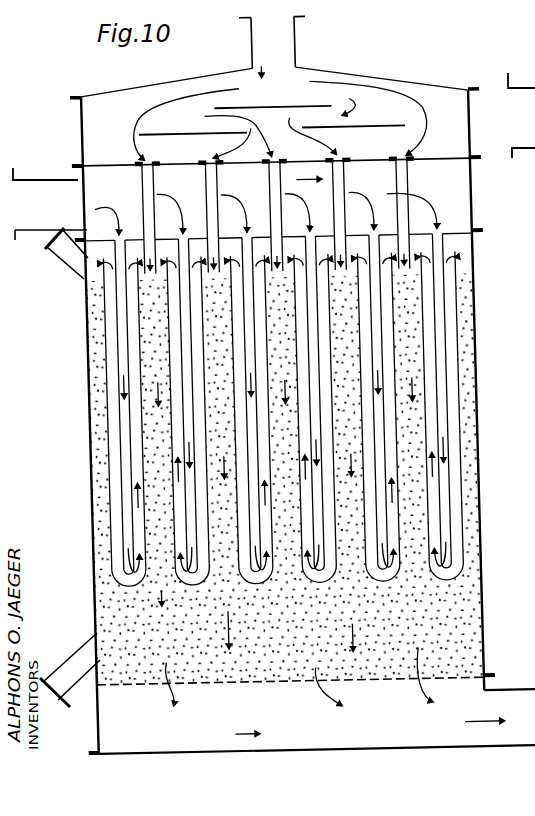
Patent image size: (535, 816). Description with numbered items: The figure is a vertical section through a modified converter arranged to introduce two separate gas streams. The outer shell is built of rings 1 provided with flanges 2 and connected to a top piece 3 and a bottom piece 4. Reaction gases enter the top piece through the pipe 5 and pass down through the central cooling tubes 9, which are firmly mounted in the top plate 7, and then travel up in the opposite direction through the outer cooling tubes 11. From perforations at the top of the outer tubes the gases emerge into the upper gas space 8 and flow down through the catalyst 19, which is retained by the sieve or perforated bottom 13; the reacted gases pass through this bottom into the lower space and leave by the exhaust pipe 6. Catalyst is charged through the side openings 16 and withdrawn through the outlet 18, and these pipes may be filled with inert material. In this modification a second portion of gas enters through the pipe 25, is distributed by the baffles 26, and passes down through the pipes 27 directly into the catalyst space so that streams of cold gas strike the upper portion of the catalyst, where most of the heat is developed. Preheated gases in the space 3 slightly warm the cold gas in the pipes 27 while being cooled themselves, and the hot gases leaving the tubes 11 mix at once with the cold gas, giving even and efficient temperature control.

The rings 1 is at (84, 129).
The flanges 2 is at (72, 98).
The top piece 3 is at (276, 175).
The bottom piece 4 is at (318, 752).
The pipe 5 is at (45, 184).
The exhaust pipe 6 is at (520, 687).
The top plate 7 is at (474, 218).
The upper gas space 8 is at (268, 236).
The central cooling tubes 9 is at (118, 406).
The outer cooling tubes 11 is at (104, 352).
The sieve or perforated bottom 13 is at (275, 684).
The side openings 16 is at (51, 257).
The outlet 18 is at (72, 665).
The catalyst 19 is at (97, 440).
The pipe 25 is at (301, 30).
The baffles 26 is at (184, 132).
The pipes 27 is at (156, 200).